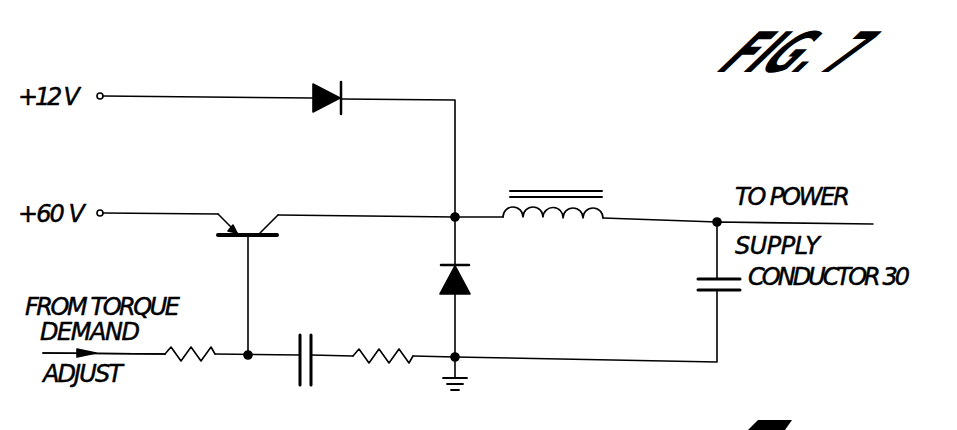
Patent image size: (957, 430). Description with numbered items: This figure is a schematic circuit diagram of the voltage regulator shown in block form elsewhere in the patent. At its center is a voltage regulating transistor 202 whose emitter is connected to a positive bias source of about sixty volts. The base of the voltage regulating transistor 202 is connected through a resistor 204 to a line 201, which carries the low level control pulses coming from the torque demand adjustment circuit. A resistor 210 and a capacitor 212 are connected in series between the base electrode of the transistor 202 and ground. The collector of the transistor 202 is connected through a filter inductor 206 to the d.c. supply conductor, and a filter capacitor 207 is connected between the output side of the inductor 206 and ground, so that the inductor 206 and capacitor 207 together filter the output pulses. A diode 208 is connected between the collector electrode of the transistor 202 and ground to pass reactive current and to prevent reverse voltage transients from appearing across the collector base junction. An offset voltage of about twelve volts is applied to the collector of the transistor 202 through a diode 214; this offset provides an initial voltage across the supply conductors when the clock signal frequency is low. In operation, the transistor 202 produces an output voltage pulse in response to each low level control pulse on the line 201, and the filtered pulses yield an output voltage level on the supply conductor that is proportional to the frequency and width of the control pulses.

The line 201 is at (157, 356).
The voltage regulating transistor 202 is at (250, 228).
The resistor 204 is at (214, 357).
The filter inductor 206 is at (607, 212).
The filter capacitor 207 is at (693, 287).
The diode 208 is at (468, 280).
The resistor 210 is at (380, 350).
The capacitor 212 is at (309, 333).
The diode 214 is at (321, 84).